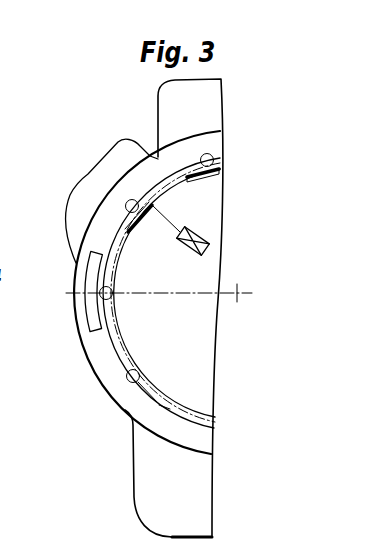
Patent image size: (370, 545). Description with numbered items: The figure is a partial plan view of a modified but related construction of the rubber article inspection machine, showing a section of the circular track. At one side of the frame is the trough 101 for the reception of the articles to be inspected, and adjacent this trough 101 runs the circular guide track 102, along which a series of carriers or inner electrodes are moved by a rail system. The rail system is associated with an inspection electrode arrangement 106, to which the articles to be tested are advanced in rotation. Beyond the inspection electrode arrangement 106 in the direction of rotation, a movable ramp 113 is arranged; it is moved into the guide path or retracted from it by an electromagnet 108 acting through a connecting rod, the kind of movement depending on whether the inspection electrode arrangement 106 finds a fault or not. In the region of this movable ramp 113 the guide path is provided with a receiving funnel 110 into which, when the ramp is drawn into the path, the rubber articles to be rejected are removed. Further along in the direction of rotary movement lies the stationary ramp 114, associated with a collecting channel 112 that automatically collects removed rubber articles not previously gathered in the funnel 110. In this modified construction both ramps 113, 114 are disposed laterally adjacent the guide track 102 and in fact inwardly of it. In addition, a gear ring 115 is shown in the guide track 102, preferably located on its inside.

The trough 101 is at (150, 485).
The guide track 102 is at (120, 363).
The inspection electrode arrangement 106 is at (97, 313).
The electromagnet 108 is at (188, 252).
The receiving funnel 110 is at (103, 177).
The collecting channel 112 is at (168, 102).
The ramp 113 is at (137, 220).
The ramp 114 is at (123, 142).
The gear ring 115 is at (130, 412).